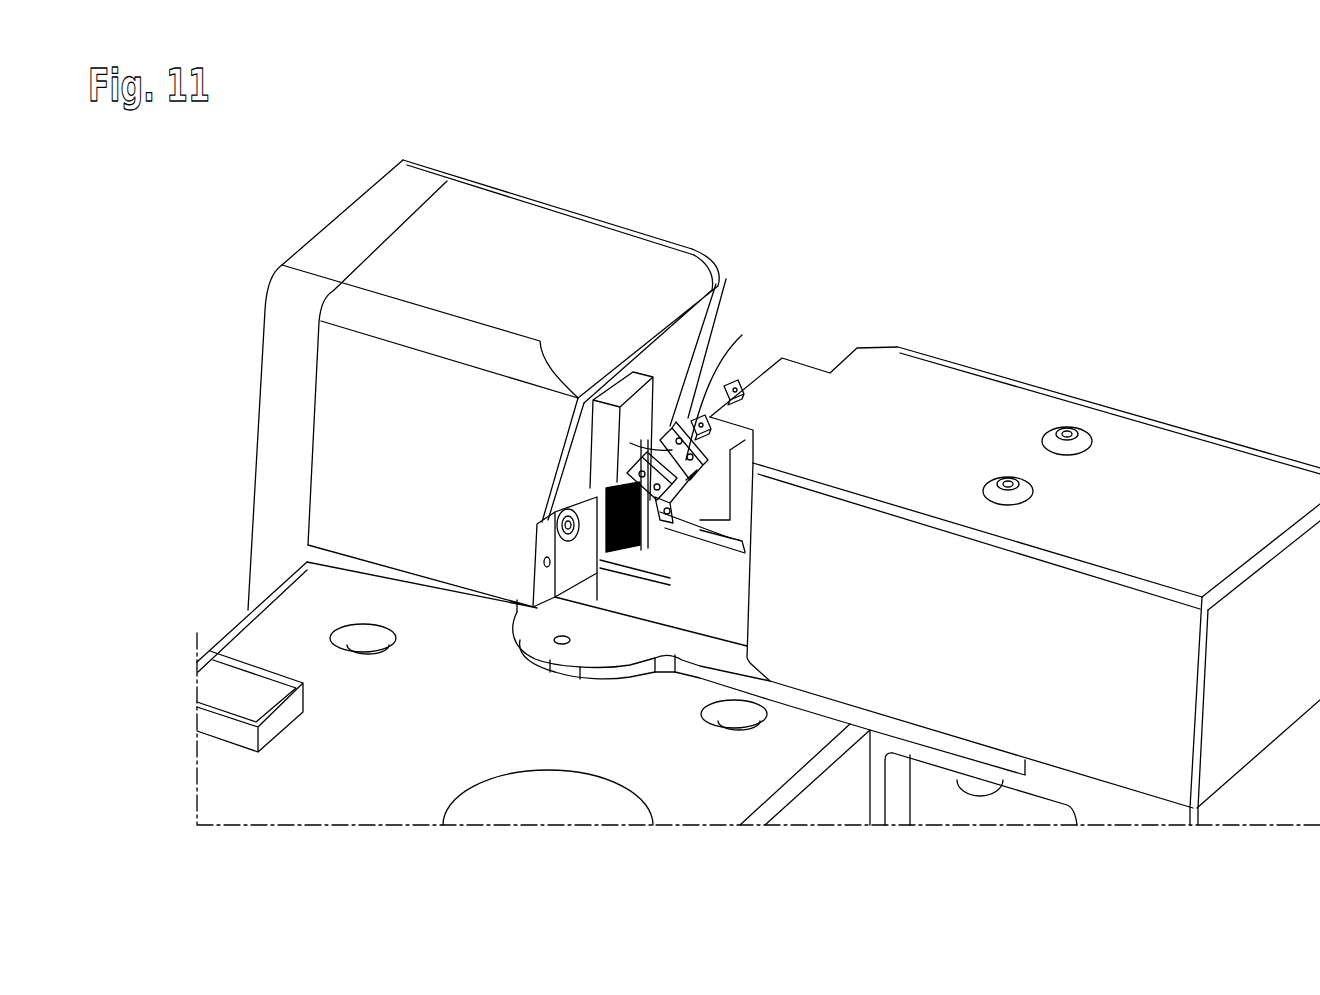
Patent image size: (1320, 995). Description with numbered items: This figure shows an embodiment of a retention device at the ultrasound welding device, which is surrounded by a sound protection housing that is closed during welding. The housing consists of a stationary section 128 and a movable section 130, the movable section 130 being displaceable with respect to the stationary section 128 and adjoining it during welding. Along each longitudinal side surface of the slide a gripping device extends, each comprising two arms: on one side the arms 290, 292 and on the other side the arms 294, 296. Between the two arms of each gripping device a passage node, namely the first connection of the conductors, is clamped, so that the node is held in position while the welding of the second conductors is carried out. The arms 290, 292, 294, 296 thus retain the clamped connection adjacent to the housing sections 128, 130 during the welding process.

The stationary section 128 is at (508, 218).
The movable section 130 is at (866, 362).
The arm 290 is at (606, 489).
The arm 292 is at (668, 452).
The arm 294 is at (693, 418).
The arm 296 is at (730, 383).